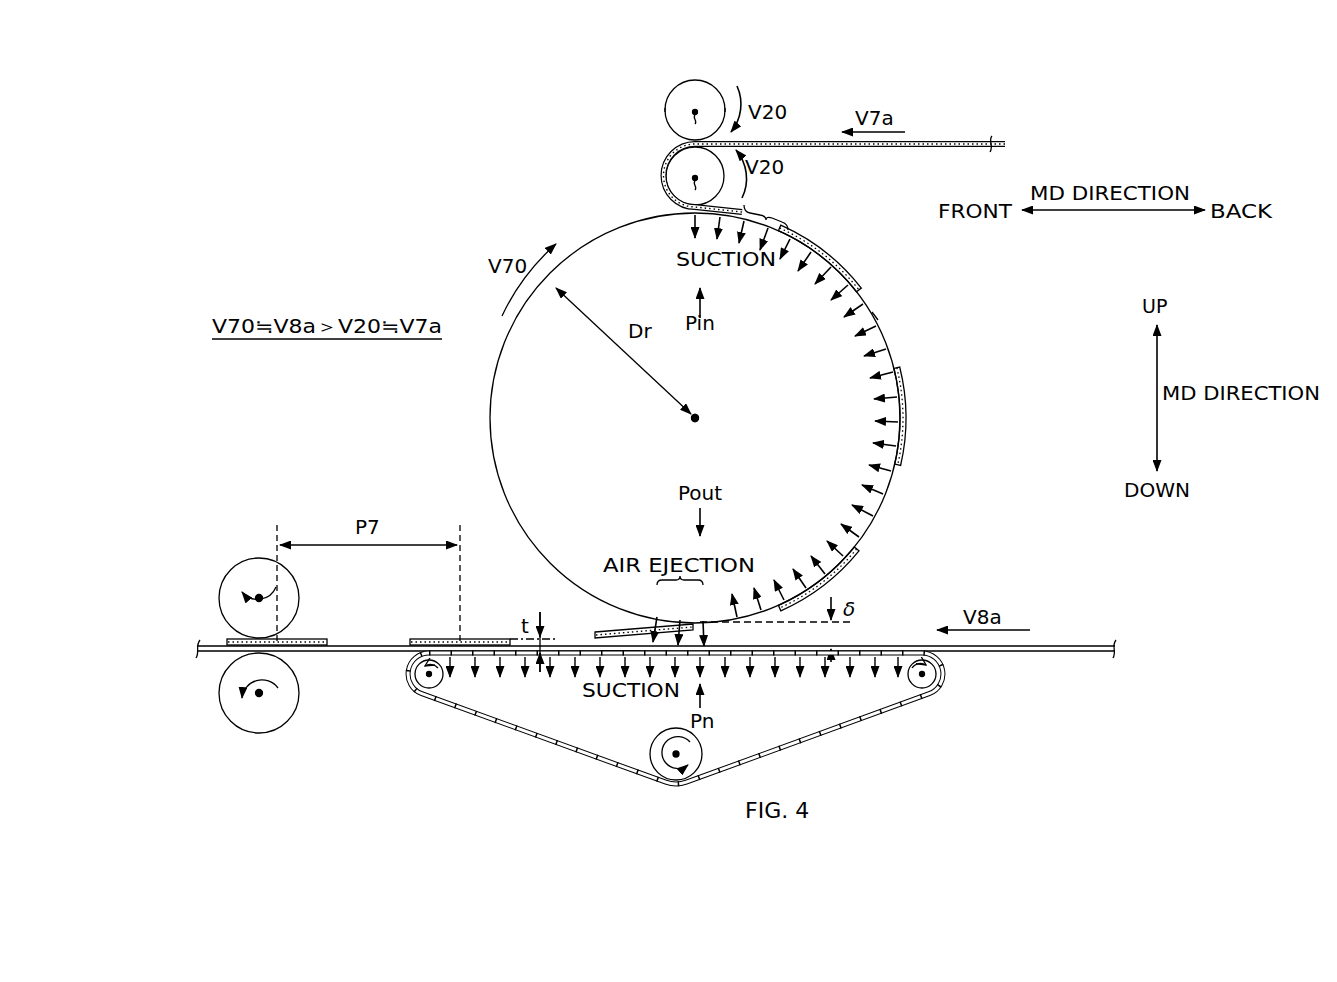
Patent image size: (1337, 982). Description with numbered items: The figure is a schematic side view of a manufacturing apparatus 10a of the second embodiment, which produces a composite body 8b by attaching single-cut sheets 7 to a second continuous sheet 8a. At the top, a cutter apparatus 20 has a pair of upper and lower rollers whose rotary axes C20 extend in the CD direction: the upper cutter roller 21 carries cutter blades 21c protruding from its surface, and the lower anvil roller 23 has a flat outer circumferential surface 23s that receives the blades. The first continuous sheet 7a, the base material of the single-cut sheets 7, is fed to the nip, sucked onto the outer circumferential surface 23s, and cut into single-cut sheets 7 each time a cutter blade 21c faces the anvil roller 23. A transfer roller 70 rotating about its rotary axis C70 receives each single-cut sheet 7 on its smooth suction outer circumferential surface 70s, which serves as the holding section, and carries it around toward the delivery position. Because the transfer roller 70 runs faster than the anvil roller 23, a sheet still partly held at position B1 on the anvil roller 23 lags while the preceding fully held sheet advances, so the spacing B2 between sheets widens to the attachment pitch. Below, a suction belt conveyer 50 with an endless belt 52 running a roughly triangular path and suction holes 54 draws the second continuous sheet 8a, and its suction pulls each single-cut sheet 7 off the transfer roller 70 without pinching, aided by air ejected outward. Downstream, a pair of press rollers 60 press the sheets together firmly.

The manufacturing apparatus 10a is at (505, 187).
The cutter apparatus 20 is at (655, 143).
The cutter roller 21 is at (707, 108).
The cutter blades 21c is at (663, 109).
The anvil roller 23 is at (707, 174).
The outer circumferential surface 23s is at (663, 191).
The rotary axes C20 is at (695, 160).
The single-cut sheet 7 is at (722, 210).
The first continuous sheet 7a is at (930, 141).
The transfer roller 70 is at (870, 305).
The outer circumferential surface 70s is at (874, 311).
The rotary axis C70 is at (692, 420).
The position B1 is at (662, 174).
The spacing B2 is at (766, 205).
The second continuous sheet 8a is at (1040, 646).
The composite body 8b is at (386, 655).
The suction belt conveyer 50 is at (691, 718).
The endless belt 52 is at (882, 722).
The suction holes 54 is at (720, 658).
The press rollers 60 is at (258, 558).